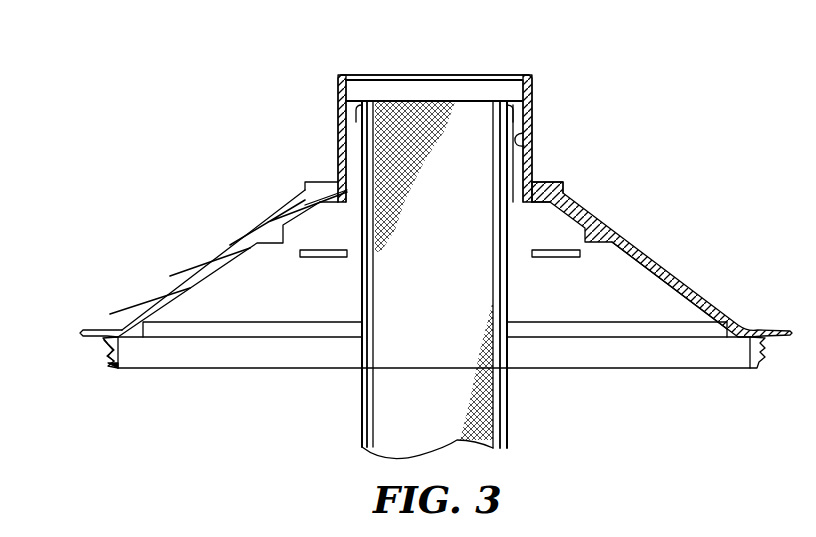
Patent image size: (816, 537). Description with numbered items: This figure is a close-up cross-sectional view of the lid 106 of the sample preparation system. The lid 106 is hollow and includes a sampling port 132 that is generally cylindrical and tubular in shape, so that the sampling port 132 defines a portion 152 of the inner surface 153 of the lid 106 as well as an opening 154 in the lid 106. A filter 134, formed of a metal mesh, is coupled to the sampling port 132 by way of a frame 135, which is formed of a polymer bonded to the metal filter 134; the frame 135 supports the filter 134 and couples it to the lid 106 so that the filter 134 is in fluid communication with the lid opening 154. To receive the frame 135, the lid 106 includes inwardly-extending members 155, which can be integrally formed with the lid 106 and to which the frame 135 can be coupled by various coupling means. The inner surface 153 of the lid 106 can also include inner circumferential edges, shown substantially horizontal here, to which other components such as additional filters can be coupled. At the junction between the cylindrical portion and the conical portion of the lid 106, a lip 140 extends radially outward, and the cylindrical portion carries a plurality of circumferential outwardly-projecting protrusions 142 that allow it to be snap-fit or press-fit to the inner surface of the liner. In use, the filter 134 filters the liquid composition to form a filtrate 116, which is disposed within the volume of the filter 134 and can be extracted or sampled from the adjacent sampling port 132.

The lid 106 is at (692, 110).
The filtrate 116 is at (400, 402).
The sampling port 132 is at (533, 88).
The filter 134 is at (406, 118).
The frame 135 is at (502, 408).
The lip 140 is at (83, 333).
The outwardly-projecting protrusions 142 is at (102, 357).
The portion of the inner surface 152 is at (518, 138).
The inner surface 153 is at (212, 278).
The opening 154 is at (462, 75).
The inwardly-extending members 155 is at (353, 110).